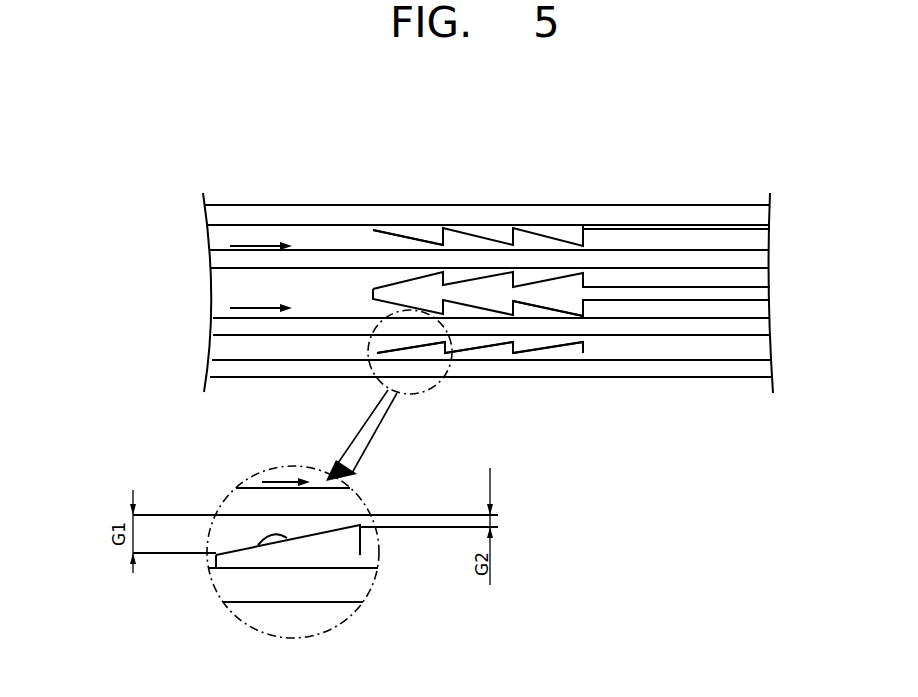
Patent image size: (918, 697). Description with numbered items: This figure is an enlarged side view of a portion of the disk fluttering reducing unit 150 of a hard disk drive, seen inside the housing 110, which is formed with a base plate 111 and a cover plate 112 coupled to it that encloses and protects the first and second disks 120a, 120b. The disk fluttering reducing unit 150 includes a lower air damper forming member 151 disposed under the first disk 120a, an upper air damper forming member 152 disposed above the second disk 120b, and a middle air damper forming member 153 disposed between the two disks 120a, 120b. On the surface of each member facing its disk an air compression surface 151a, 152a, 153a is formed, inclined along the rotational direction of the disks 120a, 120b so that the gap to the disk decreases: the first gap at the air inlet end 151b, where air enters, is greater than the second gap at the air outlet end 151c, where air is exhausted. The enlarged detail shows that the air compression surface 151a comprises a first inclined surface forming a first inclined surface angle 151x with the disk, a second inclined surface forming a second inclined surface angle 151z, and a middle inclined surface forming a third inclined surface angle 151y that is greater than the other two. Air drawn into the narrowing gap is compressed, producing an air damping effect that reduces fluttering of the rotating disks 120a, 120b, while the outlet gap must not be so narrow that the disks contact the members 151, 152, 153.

The housing 110 is at (92, 287).
The base plate 111 is at (212, 365).
The cover plate 112 is at (205, 218).
The first disk 120a is at (762, 327).
The second disk 120b is at (762, 258).
The disk fluttering reducing unit 150 is at (618, 443).
The lower air damper forming member 151 is at (492, 350).
The air compression surface 151a is at (413, 350).
The air inlet end 151b is at (213, 558).
The air outlet end 151c is at (362, 527).
The first inclined surface angle 151x is at (402, 345).
The third inclined surface angle 151y is at (416, 346).
The second inclined surface angle 151z is at (515, 285).
The upper air damper forming member 152 is at (505, 229).
The air compression surface 152a is at (403, 238).
The middle air damper forming member 153 is at (578, 298).
The air compression surface 153a is at (556, 310).